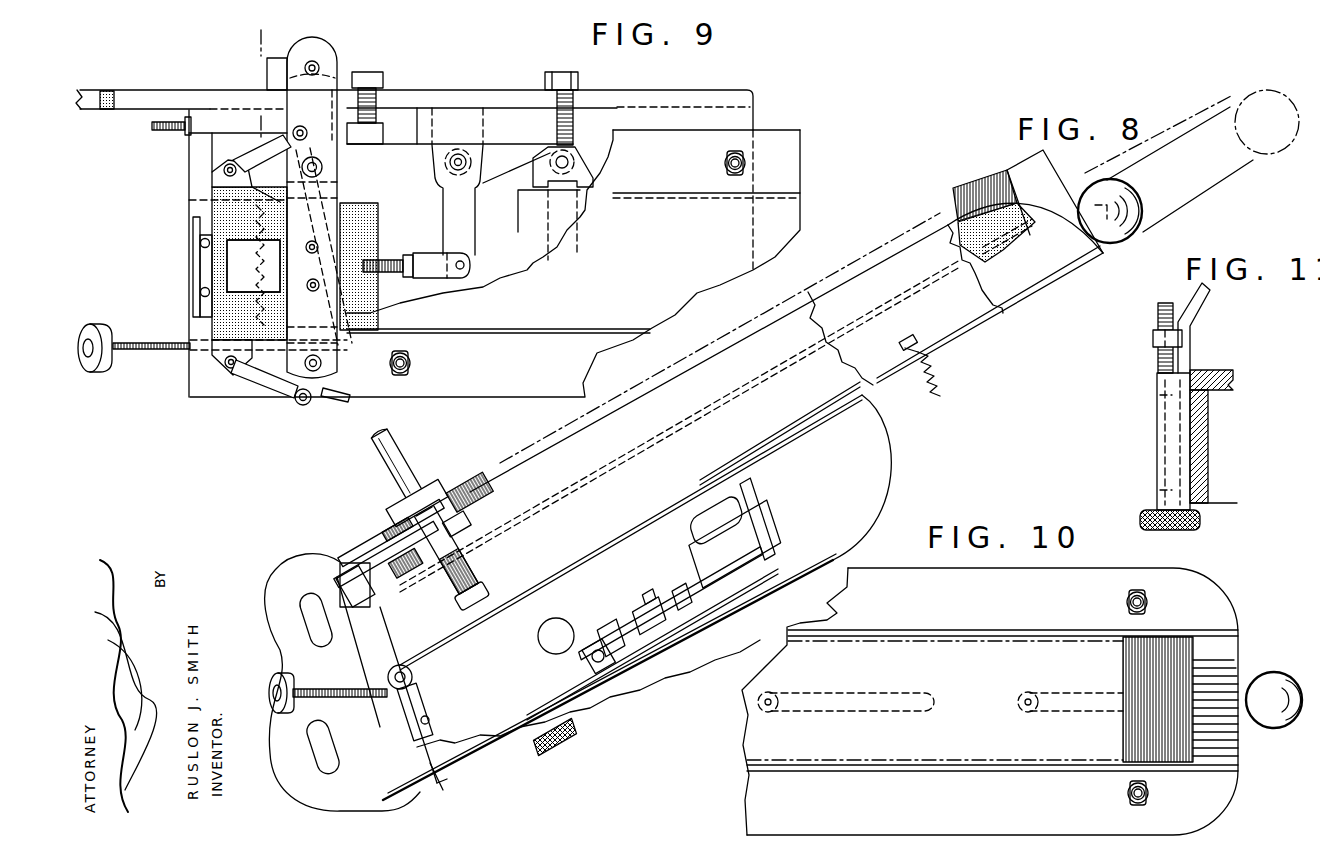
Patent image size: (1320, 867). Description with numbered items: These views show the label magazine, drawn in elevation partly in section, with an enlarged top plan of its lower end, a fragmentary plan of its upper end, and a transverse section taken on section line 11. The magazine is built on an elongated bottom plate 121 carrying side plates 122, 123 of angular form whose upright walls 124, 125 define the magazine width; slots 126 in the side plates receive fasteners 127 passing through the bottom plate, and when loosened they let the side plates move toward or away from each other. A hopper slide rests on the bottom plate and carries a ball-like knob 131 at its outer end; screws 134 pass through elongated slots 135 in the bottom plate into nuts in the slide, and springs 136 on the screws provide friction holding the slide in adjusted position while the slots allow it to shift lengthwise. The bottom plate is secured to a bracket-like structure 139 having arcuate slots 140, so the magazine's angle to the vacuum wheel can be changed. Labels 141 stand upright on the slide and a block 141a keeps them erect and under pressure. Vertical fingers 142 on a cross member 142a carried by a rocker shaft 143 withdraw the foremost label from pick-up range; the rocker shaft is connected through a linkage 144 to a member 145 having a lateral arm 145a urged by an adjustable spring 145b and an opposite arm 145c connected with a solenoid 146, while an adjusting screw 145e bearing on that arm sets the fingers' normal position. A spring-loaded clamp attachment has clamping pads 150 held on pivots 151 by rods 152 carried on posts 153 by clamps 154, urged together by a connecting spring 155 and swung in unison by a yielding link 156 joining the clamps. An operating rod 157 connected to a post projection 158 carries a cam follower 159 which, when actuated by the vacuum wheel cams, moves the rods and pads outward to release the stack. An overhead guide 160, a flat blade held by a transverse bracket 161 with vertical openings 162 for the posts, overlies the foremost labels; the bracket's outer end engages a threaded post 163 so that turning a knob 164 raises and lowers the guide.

In FIG. 9, the section line 11— 11 is at (250, 37).
In FIG. 8, the bottom plate 121 is at (950, 343).
In FIG. 10, the side plate 122 is at (1040, 590).
In FIG. 10, the side plate 123 is at (1223, 822).
In FIG. 9, the upright wall 124 is at (665, 197).
In FIG. 10, the upright wall 124 is at (1222, 607).
In FIG. 9, the upright wall 125 is at (572, 327).
In FIG. 10, the upright wall 125 is at (1215, 768).
In FIG. 9, the slot 126 is at (408, 373).
In FIG. 10, the slot 126 is at (1130, 600).
In FIG. 9, the fastener 127 is at (412, 363).
In FIG. 10, the fastener 127 is at (1148, 602).
In FIG. 8, the ball-like knob 131 is at (1130, 228).
In FIG. 10, the ball-like knob 131 is at (1283, 690).
In FIG. 8, the screw 134 is at (935, 393).
In FIG. 10, the slot 135 is at (922, 712).
In FIG. 8, the spring 136 is at (912, 390).
In FIG. 8, the bracket-like structure 139 is at (370, 778).
In FIG. 8, the arcuate slot 140 is at (307, 613).
In FIG. 9, the labels 141 is at (400, 308).
In FIG. 8, the labels 141 is at (987, 185).
In FIG. 10, the labels 141 is at (1175, 648).
In FIG. 8, the block 141a is at (1040, 155).
In FIG. 8, the vertical fingers 142 is at (374, 628).
In FIG. 8, the cross member 142a is at (390, 692).
In FIG. 8, the rocker shaft 143 is at (411, 728).
In FIG. 9, the linkage 144 is at (437, 247).
In FIG. 8, the linkage 144 is at (600, 596).
In FIG. 9, the member 145 is at (466, 213).
In FIG. 9, the lateral arm 145a is at (416, 160).
In FIG. 9, the adjustable spring 145b is at (374, 72).
In FIG. 9, the arm 145c is at (512, 145).
In FIG. 9, the adjusting screw 145e is at (573, 118).
In FIG. 9, the solenoid 146 is at (538, 210).
In FIG. 8, the solenoid 146 is at (697, 563).
In FIG. 9, the clamping pads 150 is at (212, 190).
In FIG. 9, the pivot 151 is at (222, 168).
In FIG. 9, the rod 152 is at (262, 153).
In FIG. 8, the rod 152 is at (387, 513).
In FIG. 9, the post 153 is at (350, 150).
In FIG. 8, the post 153 is at (403, 453).
In FIG. 9, the clamp 154 is at (374, 192).
In FIG. 8, the clamp 154 is at (463, 560).
In FIG. 9, the connecting spring 155 is at (193, 250).
In FIG. 9, the yielding link 156 is at (370, 240).
In FIG. 9, the operating rod 157 is at (168, 320).
In FIG. 8, the operating rod 157 is at (357, 670).
In FIG. 9, the post projection 158 is at (350, 372).
In FIG. 9, the cam follower 159 is at (100, 325).
In FIG. 8, the cam follower 159 is at (273, 711).
In FIG. 9, the overhead guide 160 is at (277, 273).
In FIG. 8, the overhead guide 160 is at (383, 540).
In FIG. 9, the bracket 161 is at (326, 115).
In FIG. 9, the vertical openings 162 is at (296, 400).
In FIG. 9, the threaded post 163 is at (313, 58).
In FIG. 11, the threaded post 163 is at (1160, 307).
In FIG. 11, the knob 164 is at (1148, 515).